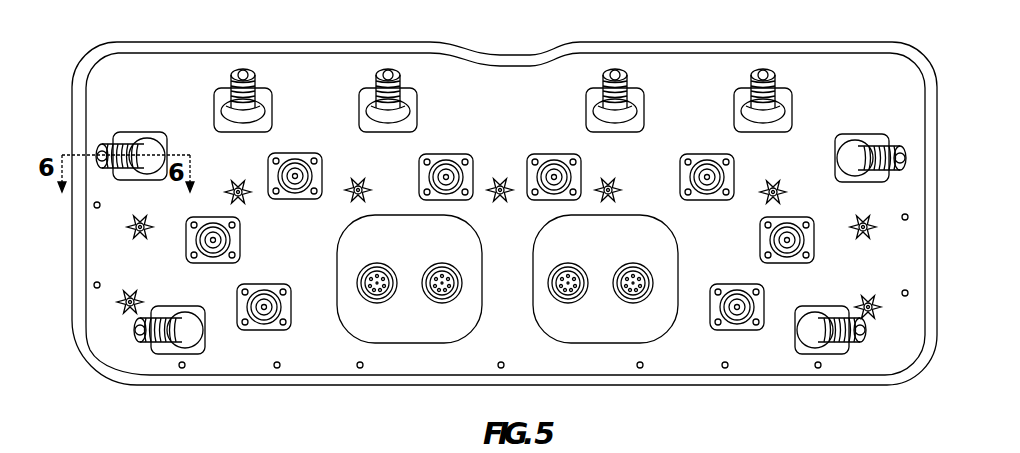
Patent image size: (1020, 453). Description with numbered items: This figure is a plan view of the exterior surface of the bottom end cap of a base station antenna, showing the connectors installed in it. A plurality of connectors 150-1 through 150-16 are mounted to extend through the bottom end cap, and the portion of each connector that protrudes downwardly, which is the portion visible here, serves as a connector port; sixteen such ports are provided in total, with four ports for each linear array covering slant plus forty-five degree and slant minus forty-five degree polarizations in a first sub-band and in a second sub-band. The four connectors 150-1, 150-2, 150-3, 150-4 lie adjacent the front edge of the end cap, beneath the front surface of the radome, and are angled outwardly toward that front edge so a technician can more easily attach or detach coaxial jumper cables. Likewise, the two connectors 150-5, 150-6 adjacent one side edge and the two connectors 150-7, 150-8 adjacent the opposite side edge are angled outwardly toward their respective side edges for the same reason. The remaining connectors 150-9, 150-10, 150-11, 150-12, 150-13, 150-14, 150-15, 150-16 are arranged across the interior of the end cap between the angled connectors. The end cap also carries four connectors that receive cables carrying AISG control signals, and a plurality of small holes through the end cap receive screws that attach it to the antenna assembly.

The connector 150-1 is at (262, 88).
The connector 150-2 is at (404, 88).
The connector 150-3 is at (618, 72).
The connector 150-4 is at (773, 72).
The connector 150-5 is at (158, 142).
The connector 150-6 is at (207, 330).
The connector 150-7 is at (862, 142).
The connector 150-8 is at (796, 330).
The connector 150-9 is at (284, 284).
The connector 150-10 is at (216, 217).
The connector 150-11 is at (303, 153).
The connector 150-12 is at (449, 154).
The connector 150-13 is at (556, 154).
The connector 150-14 is at (709, 154).
The connector 150-15 is at (800, 217).
The connector 150-16 is at (721, 284).